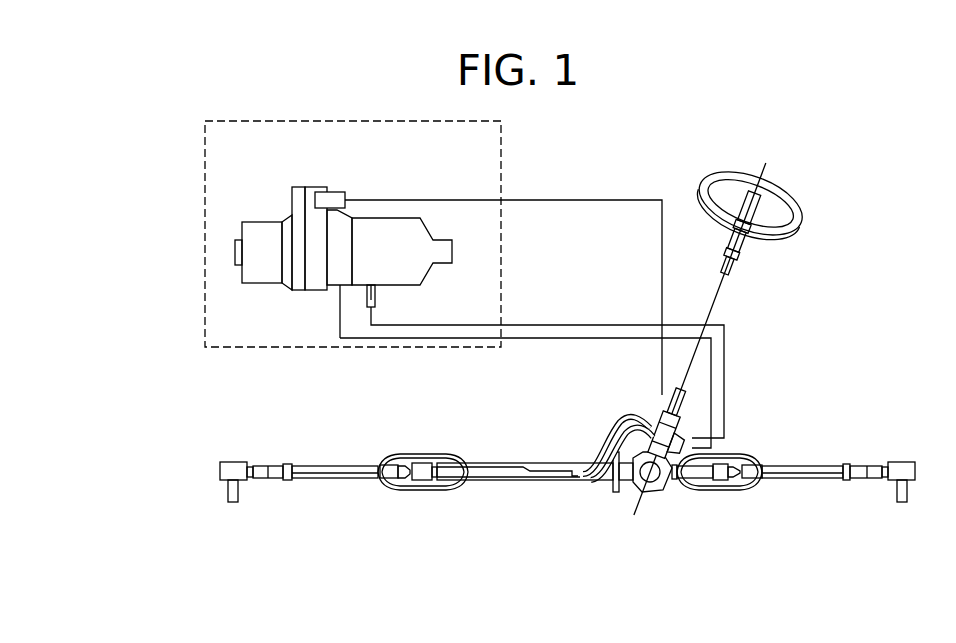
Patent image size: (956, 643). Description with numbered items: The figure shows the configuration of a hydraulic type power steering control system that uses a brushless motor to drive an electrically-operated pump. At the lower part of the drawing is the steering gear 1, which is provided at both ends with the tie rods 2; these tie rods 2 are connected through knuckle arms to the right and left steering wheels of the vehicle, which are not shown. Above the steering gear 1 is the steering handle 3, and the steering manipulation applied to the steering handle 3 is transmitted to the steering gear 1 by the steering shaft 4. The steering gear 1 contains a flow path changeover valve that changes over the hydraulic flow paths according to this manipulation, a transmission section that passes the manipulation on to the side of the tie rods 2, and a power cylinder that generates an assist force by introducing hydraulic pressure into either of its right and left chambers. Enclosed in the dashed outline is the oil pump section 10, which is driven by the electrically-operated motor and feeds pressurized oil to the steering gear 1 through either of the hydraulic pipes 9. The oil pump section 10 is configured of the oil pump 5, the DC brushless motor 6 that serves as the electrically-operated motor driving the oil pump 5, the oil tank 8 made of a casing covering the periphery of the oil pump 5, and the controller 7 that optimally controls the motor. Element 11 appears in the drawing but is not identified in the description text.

The steering gear 1 is at (495, 480).
The tie rods 2 is at (805, 478).
The steering handle 3 is at (802, 202).
The steering shaft 4 is at (715, 297).
The oil pump 5 is at (342, 250).
The DC brushless motor 6 is at (261, 232).
The controller 7 is at (312, 198).
The oil tank 8 is at (390, 225).
The hydraulic pipes 9 is at (590, 338).
The oil pump section 10 is at (503, 128).
The pinion valve housing 11 is at (658, 413).